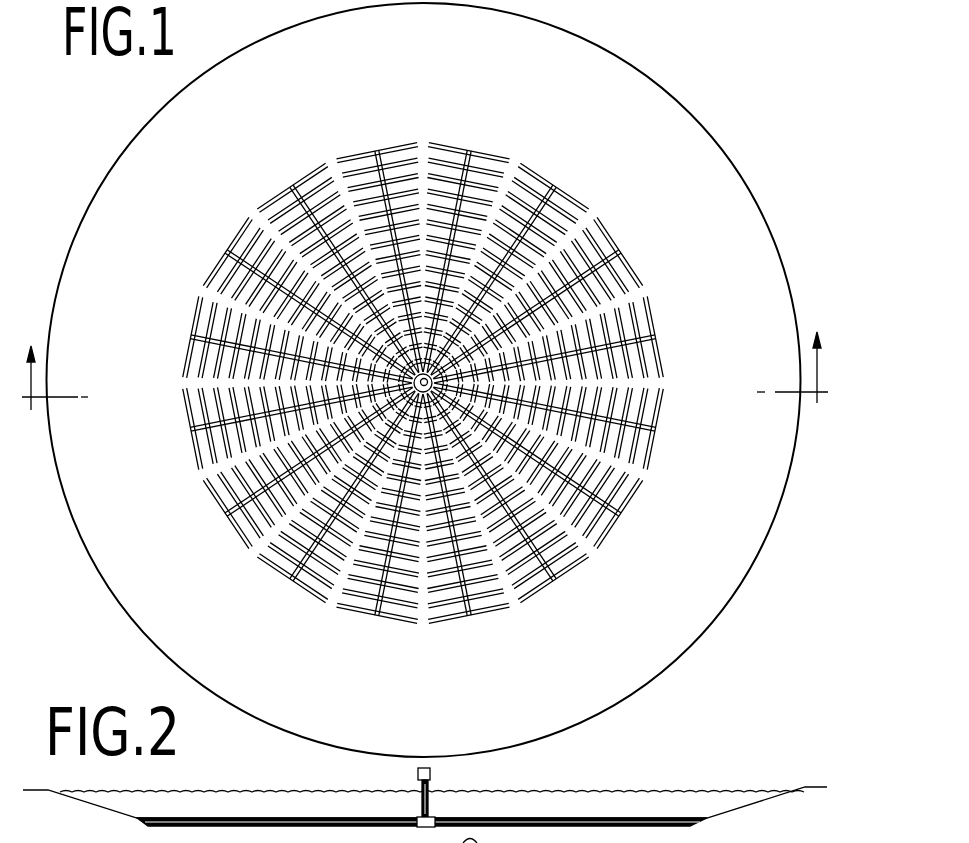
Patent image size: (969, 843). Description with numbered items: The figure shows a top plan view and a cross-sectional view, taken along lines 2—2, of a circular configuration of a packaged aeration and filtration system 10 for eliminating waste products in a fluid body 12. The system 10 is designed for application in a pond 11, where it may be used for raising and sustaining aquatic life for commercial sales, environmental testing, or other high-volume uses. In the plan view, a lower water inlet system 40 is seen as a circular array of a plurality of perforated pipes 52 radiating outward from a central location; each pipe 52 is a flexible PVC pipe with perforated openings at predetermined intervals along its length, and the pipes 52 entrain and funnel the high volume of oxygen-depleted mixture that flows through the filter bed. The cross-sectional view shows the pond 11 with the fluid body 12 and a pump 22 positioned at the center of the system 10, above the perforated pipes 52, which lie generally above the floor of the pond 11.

In FIG. 1, the aeration and filtration system 10 is at (697, 106).
In FIG. 1, the section lines 2— 2 is at (425, 387).
In FIG. 1, the lower water inlet system 40 is at (208, 502).
In FIG. 1, the perforated pipes 52 is at (537, 582).
In FIG. 2, the pond 11 is at (722, 775).
In FIG. 2, the fluid body 12 is at (568, 808).
In FIG. 2, the pump 22 is at (430, 812).